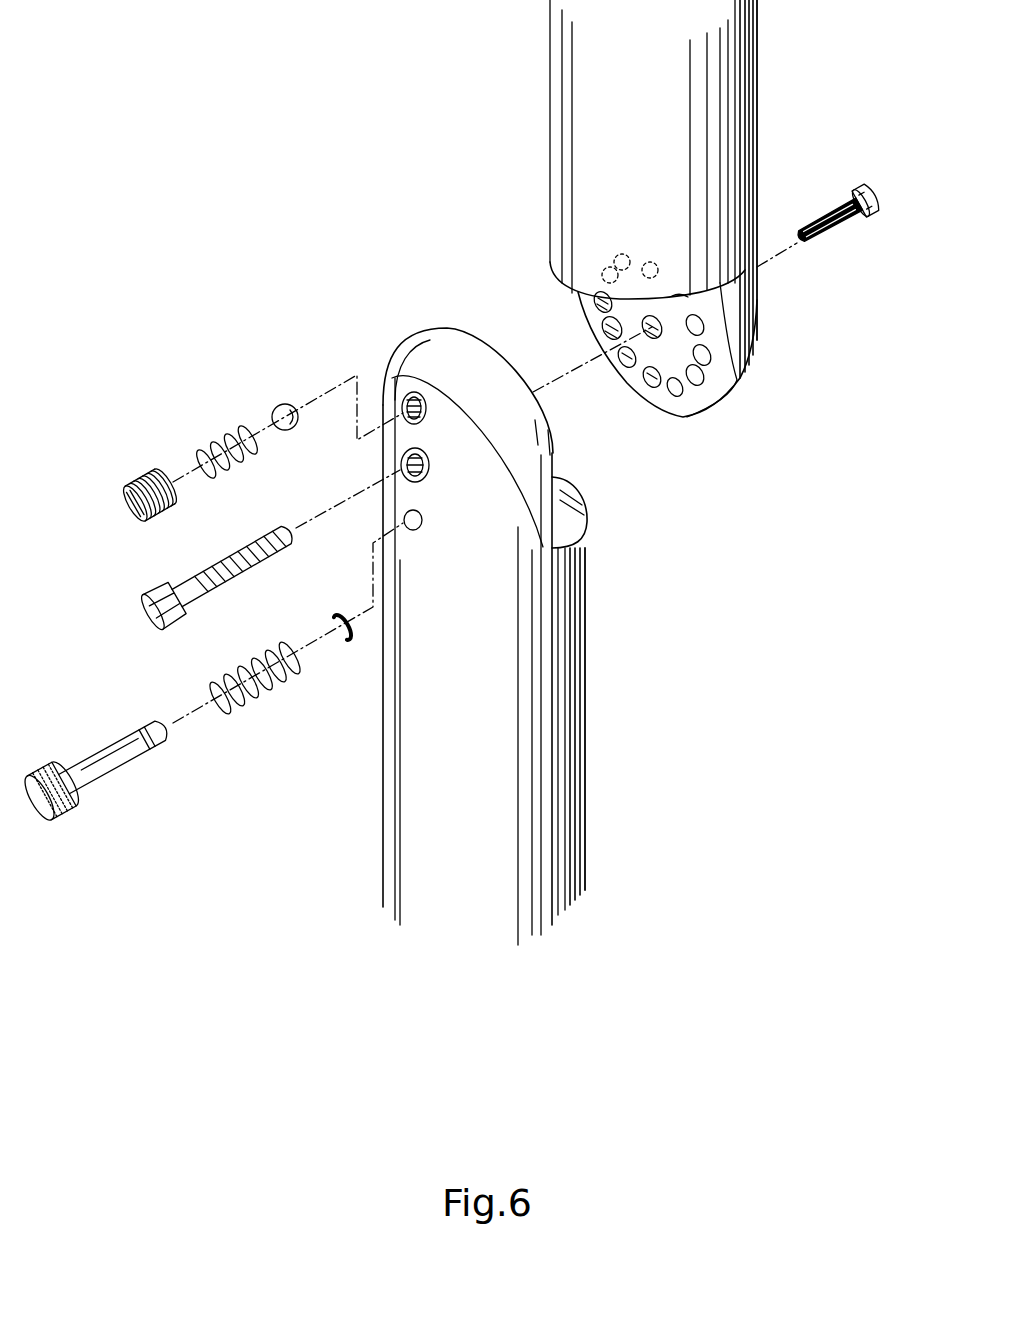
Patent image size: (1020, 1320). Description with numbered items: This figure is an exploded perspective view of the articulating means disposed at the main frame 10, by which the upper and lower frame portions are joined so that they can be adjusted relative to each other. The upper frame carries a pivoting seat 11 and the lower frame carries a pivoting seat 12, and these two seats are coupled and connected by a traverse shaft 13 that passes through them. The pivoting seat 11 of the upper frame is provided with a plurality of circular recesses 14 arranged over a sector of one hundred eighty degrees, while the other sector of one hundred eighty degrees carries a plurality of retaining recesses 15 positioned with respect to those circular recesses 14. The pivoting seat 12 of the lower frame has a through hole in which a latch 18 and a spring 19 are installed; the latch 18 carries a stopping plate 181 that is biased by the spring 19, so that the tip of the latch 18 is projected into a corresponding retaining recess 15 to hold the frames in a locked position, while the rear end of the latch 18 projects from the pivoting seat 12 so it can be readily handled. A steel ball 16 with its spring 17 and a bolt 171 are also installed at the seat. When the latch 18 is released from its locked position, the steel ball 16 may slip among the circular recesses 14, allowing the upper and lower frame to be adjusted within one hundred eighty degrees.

The main frame 10 is at (603, 135).
The pivoting seat 11 is at (668, 402).
The pivoting seat 12 is at (480, 353).
The traverse shaft 13 is at (193, 585).
The circular recess 14 is at (708, 353).
The retaining recess 15 is at (600, 328).
The steel ball 16 is at (285, 405).
The spring 17 is at (220, 440).
The bolt 171 is at (145, 477).
The latch 18 is at (127, 763).
The stopping plate 181 is at (330, 612).
The spring 19 is at (260, 695).